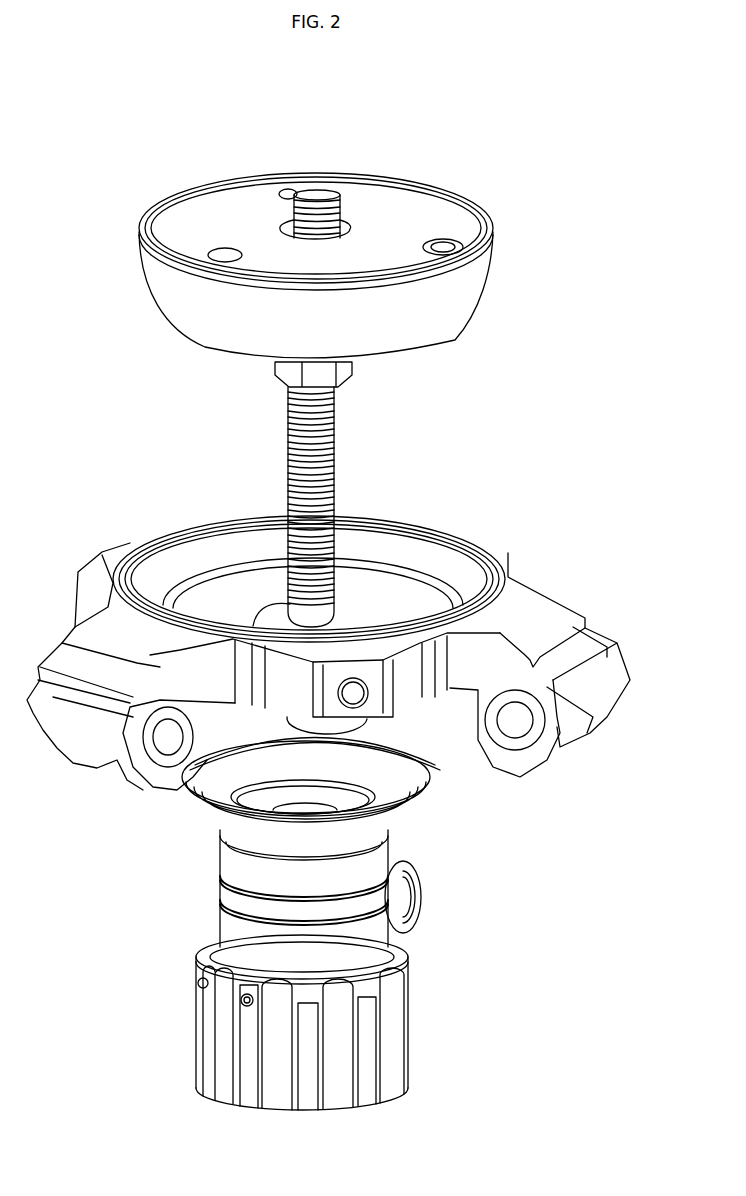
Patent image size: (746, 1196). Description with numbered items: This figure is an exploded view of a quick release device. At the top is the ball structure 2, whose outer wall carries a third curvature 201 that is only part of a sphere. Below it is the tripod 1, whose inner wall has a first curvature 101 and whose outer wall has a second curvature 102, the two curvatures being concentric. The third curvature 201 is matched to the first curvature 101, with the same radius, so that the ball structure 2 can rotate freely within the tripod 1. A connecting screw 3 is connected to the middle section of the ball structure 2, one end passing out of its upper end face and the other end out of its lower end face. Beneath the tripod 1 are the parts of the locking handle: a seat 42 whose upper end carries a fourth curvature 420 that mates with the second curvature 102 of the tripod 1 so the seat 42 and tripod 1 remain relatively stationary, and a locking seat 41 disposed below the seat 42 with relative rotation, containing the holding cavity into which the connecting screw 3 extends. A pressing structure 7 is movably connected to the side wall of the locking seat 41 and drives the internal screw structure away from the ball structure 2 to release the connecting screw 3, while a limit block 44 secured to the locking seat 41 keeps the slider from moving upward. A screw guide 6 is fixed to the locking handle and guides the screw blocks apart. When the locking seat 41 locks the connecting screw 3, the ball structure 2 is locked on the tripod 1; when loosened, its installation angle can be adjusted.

The tripod 1 is at (328, 652).
The first curvature 101 is at (450, 570).
The second curvature 102 is at (373, 720).
The ball structure 2 is at (373, 257).
The third curvature 201 is at (455, 307).
The connecting screw 3 is at (338, 450).
The fourth curvature 420 is at (207, 787).
The seat 42 is at (306, 888).
The limit block 44 is at (367, 900).
The pressing structure 7 is at (423, 887).
The locking seat 41 is at (266, 1020).
The screw guide 6 is at (240, 1002).